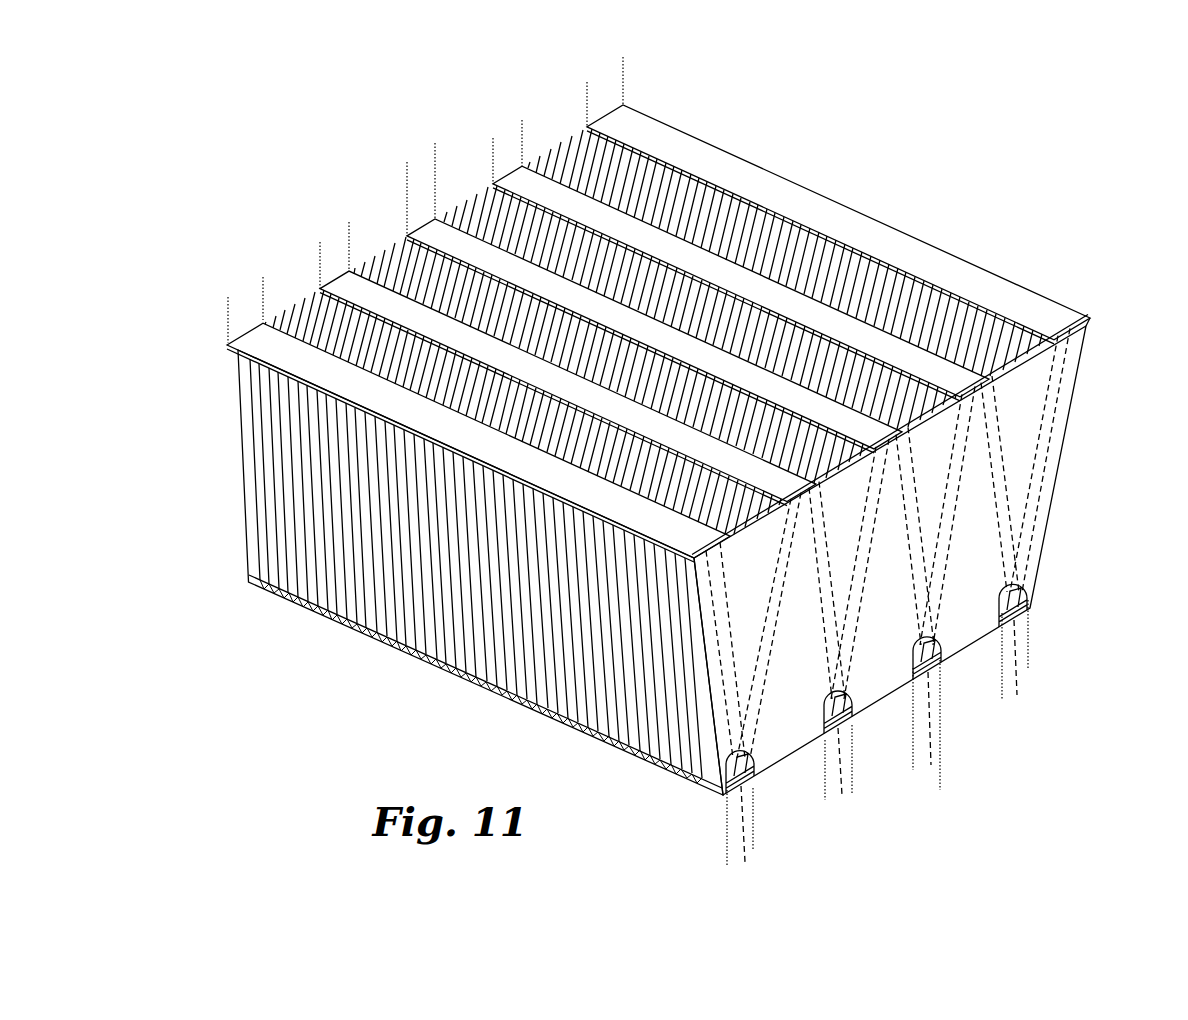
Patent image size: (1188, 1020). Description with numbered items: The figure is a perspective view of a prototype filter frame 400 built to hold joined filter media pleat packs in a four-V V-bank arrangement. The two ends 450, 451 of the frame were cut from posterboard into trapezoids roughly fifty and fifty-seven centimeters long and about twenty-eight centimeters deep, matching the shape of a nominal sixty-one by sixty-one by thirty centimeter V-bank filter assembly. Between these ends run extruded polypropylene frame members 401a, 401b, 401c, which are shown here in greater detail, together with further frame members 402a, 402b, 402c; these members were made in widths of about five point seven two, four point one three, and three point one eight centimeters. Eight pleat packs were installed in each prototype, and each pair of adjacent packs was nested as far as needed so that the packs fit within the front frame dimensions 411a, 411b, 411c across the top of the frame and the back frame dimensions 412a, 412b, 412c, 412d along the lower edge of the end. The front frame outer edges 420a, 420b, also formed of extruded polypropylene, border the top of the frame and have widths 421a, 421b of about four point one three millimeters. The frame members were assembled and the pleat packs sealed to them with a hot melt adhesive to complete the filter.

The prototype frame 400 is at (663, 466).
The frame member 401a is at (757, 234).
The frame member 401b is at (676, 270).
The frame member 401c is at (589, 338).
The frame member 402a is at (973, 698).
The frame member 402b is at (700, 875).
The frame member 402c is at (797, 810).
The front frame dimension 411a is at (466, 160).
The front frame dimension 411b is at (381, 183).
The front frame dimension 411c is at (373, 220).
The back frame dimension 412a is at (1030, 662).
The back frame dimension 412b is at (942, 737).
The back frame dimension 412c is at (854, 775).
The back frame dimension 412d is at (756, 846).
The front frame outer edge 420a is at (681, 143).
The front frame outer edge 420b is at (262, 355).
The width of front frame outer edge 421a is at (621, 70).
The width of front frame outer edge 421b is at (261, 288).
The end 450 is at (1035, 390).
The end 451 is at (397, 257).